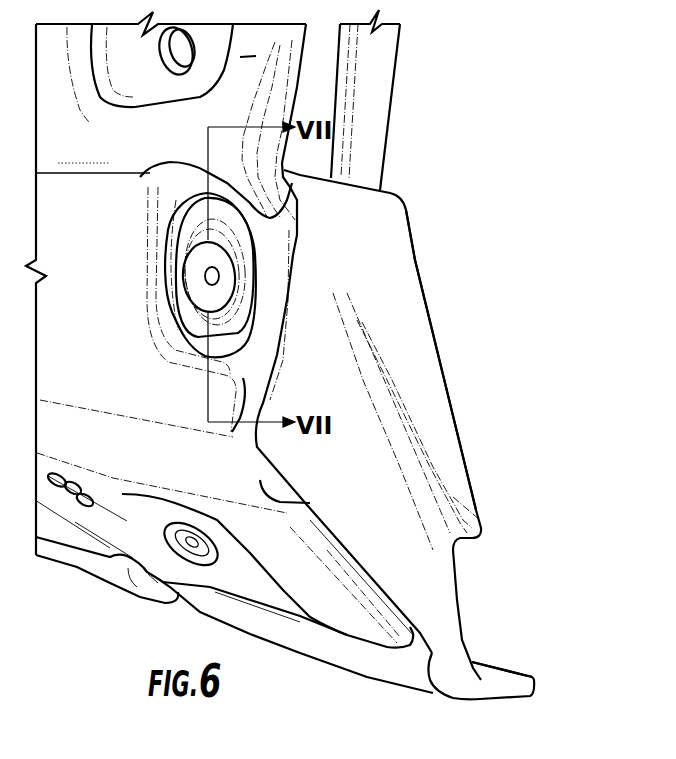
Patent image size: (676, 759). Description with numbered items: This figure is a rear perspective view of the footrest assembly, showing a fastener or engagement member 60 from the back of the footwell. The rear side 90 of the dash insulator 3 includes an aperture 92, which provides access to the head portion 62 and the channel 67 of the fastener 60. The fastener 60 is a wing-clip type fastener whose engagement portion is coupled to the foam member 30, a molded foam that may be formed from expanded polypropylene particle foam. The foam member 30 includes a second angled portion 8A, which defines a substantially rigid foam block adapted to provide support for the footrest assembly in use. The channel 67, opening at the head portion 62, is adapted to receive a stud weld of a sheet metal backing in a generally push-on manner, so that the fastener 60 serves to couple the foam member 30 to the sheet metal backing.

The rear side 90 is at (128, 257).
The fastener 60 is at (192, 281).
The head portion 62 is at (222, 261).
The channel 67 is at (219, 275).
The foam member 30 is at (345, 207).
The aperture 92 is at (262, 302).
The second angled portion 8A is at (423, 373).
The dash insulator 3 is at (310, 503).